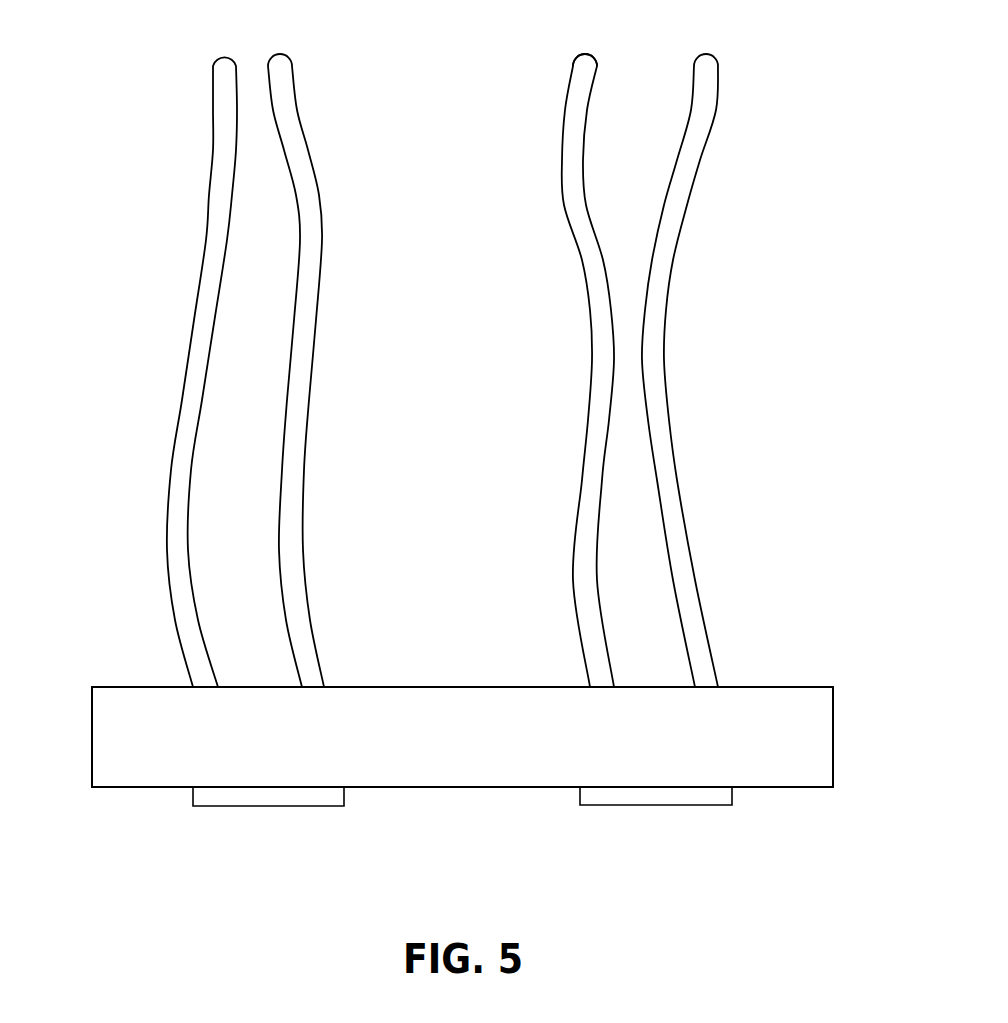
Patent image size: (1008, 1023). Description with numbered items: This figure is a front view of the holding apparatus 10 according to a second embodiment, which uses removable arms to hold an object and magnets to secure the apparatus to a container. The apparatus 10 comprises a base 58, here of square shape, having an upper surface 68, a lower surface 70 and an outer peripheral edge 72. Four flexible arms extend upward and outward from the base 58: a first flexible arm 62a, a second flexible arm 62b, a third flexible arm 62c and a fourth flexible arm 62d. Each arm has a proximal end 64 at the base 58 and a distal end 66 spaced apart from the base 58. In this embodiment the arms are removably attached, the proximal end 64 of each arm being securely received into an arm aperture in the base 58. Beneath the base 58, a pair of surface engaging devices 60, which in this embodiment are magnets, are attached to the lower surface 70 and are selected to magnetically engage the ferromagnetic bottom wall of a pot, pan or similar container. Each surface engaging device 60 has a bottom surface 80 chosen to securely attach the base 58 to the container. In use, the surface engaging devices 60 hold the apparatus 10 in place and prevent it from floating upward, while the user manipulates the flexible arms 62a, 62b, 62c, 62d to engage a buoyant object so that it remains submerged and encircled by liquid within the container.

The holding apparatus 10 is at (797, 266).
The base 58 is at (120, 738).
The surface engaging devices 60 is at (268, 798).
The first flexible arm 62a is at (183, 400).
The second flexible arm 62b is at (300, 385).
The third flexible arm 62c is at (580, 202).
The fourth flexible arm 62d is at (687, 133).
The proximal end 64 is at (587, 684).
The distal end 66 is at (565, 62).
The upper surface 68 is at (399, 685).
The lower surface 70 is at (428, 797).
The outer peripheral edge 72 is at (92, 800).
The bottom surface 80 is at (649, 818).